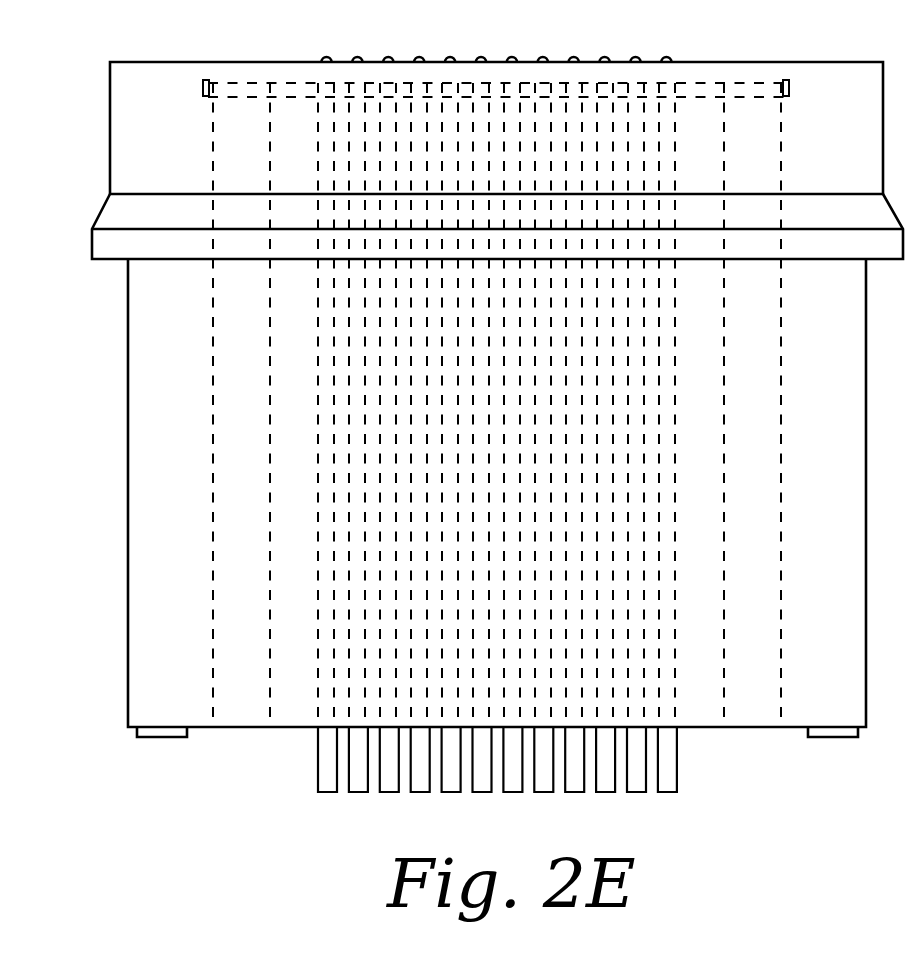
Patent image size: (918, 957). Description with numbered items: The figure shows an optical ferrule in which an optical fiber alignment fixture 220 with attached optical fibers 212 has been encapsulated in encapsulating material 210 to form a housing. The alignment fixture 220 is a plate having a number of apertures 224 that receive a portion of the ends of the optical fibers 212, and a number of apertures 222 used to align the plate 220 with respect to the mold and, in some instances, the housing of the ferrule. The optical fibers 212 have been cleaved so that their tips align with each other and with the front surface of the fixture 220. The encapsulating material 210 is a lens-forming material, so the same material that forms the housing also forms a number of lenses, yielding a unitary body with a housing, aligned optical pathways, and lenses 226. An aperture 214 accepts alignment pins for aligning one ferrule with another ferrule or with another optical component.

The encapsulating material 210 is at (464, 399).
The optical fibers 212 is at (322, 771).
The aperture 214 is at (777, 144).
The optical fiber alignment fixture 220 is at (216, 89).
The apertures 222 is at (753, 81).
The apertures 224 is at (683, 88).
The contact bumps 226 is at (356, 60).